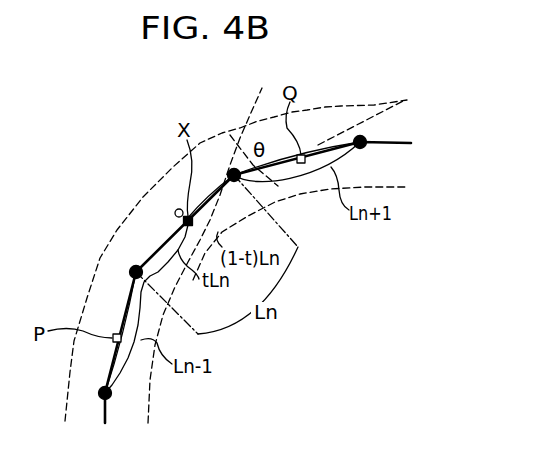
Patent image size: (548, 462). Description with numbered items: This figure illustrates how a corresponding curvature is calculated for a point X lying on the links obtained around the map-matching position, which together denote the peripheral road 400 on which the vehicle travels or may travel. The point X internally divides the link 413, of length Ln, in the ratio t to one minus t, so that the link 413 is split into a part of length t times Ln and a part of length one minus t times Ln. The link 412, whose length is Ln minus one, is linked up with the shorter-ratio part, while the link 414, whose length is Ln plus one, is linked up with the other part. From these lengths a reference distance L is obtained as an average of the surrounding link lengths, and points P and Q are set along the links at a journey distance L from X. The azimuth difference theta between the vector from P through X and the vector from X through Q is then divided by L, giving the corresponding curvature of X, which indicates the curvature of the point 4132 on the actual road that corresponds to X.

The peripheral road 400 is at (205, 255).
The link 412 is at (115, 311).
The link 413 is at (184, 224).
The link 414 is at (326, 144).
The point on the actual road 4132 is at (175, 210).